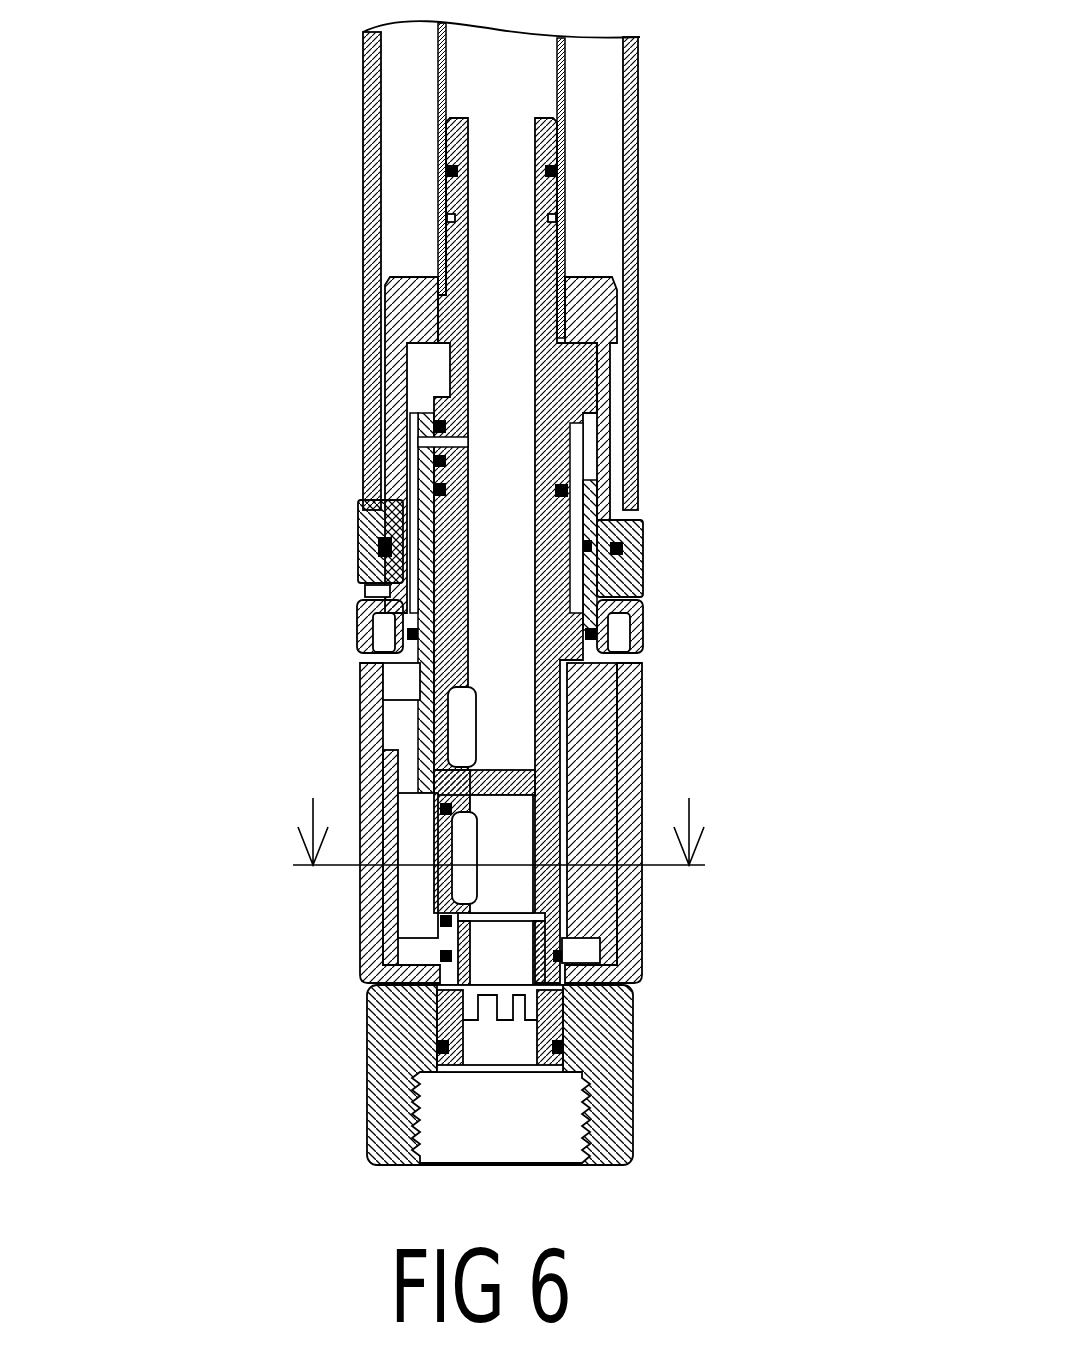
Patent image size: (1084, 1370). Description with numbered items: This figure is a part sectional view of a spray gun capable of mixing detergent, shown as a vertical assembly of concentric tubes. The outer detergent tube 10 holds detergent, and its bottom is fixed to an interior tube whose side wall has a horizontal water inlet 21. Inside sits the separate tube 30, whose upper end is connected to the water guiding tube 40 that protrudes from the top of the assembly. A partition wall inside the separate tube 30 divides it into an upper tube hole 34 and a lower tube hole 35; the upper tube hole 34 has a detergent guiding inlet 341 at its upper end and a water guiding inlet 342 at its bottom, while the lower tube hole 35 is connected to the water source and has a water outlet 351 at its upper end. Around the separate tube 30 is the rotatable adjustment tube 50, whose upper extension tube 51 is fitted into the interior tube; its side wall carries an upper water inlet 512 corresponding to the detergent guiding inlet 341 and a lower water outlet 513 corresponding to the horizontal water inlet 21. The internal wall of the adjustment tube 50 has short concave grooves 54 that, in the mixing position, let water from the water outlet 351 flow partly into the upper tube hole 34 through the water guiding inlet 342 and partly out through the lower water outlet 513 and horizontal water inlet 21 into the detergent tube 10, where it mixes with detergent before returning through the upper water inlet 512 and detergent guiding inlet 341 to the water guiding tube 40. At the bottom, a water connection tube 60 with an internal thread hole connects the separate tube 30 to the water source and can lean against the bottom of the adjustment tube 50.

The detergent tube 10 is at (630, 99).
The horizontal water inlet 21 is at (606, 530).
The separate tube 30 is at (547, 247).
The upper tube hole 34 is at (508, 685).
The detergent guiding inlet 341 is at (468, 438).
The water guiding inlet 342 is at (460, 703).
The lower tube hole 35 is at (505, 825).
The water outlet 351 is at (455, 847).
The water guiding tube 40 is at (445, 73).
The adjustment tube 50 is at (628, 933).
The upper extension tube 51 is at (423, 516).
The upper water inlet 512 is at (423, 442).
The lower water outlet 513 is at (585, 492).
The short concave grooves 54 is at (407, 897).
The water connection tube 60 is at (605, 1050).